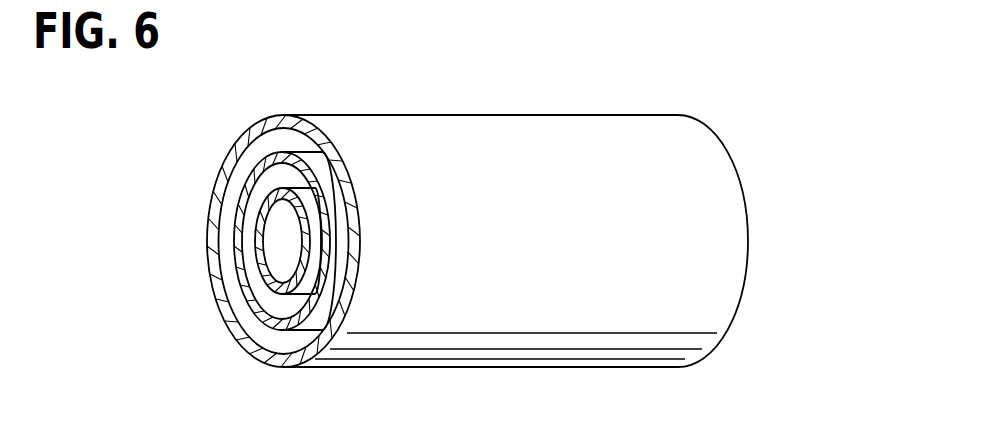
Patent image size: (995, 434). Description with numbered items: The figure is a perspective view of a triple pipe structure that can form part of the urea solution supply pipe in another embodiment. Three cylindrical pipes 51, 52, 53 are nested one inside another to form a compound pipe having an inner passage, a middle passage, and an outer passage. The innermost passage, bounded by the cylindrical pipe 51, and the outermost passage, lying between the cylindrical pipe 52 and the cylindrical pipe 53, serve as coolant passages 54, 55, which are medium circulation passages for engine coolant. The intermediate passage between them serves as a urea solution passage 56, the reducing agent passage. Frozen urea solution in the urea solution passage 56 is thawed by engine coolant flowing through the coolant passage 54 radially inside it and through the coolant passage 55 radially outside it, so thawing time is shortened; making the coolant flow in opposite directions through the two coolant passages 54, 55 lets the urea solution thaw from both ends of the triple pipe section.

The cylindrical pipe 51 is at (258, 203).
The cylindrical pipe 52 is at (255, 168).
The cylindrical pipe 53 is at (247, 141).
The coolant passage 54 is at (273, 263).
The coolant passage 55 is at (302, 335).
The urea solution passage 56 is at (275, 308).